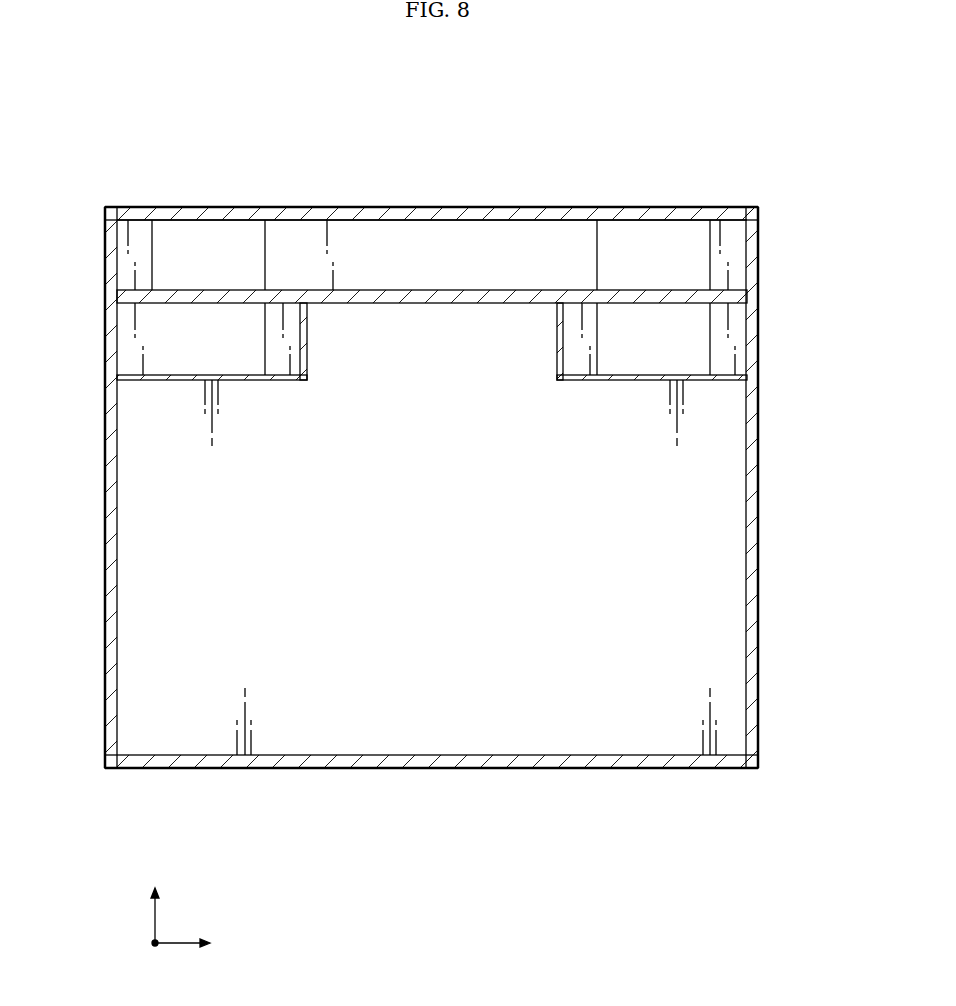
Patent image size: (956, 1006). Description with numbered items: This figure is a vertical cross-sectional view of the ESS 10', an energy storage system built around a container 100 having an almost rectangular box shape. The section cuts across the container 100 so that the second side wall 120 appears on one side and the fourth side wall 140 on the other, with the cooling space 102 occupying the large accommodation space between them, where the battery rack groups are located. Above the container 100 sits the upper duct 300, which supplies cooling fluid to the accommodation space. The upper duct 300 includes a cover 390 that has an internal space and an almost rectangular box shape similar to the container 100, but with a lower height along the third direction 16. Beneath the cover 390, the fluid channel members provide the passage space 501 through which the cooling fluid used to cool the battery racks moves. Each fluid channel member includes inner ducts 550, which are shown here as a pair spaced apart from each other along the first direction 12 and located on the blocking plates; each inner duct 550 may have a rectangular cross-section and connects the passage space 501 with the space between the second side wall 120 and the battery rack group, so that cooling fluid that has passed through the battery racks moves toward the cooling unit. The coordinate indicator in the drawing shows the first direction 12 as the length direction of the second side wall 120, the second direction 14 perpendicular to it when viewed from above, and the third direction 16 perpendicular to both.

The ESS 10' is at (145, 71).
The container 100 is at (435, 468).
The cooling space 102 is at (405, 691).
The second side wall 120 is at (760, 525).
The fourth side wall 140 is at (106, 526).
The upper duct 300 is at (431, 206).
The cover 390 is at (488, 208).
The passage space 501 is at (213, 338).
The inner duct 550 is at (253, 382).
The first direction 12 is at (155, 943).
The second direction 14 is at (199, 944).
The third direction 16 is at (155, 898).